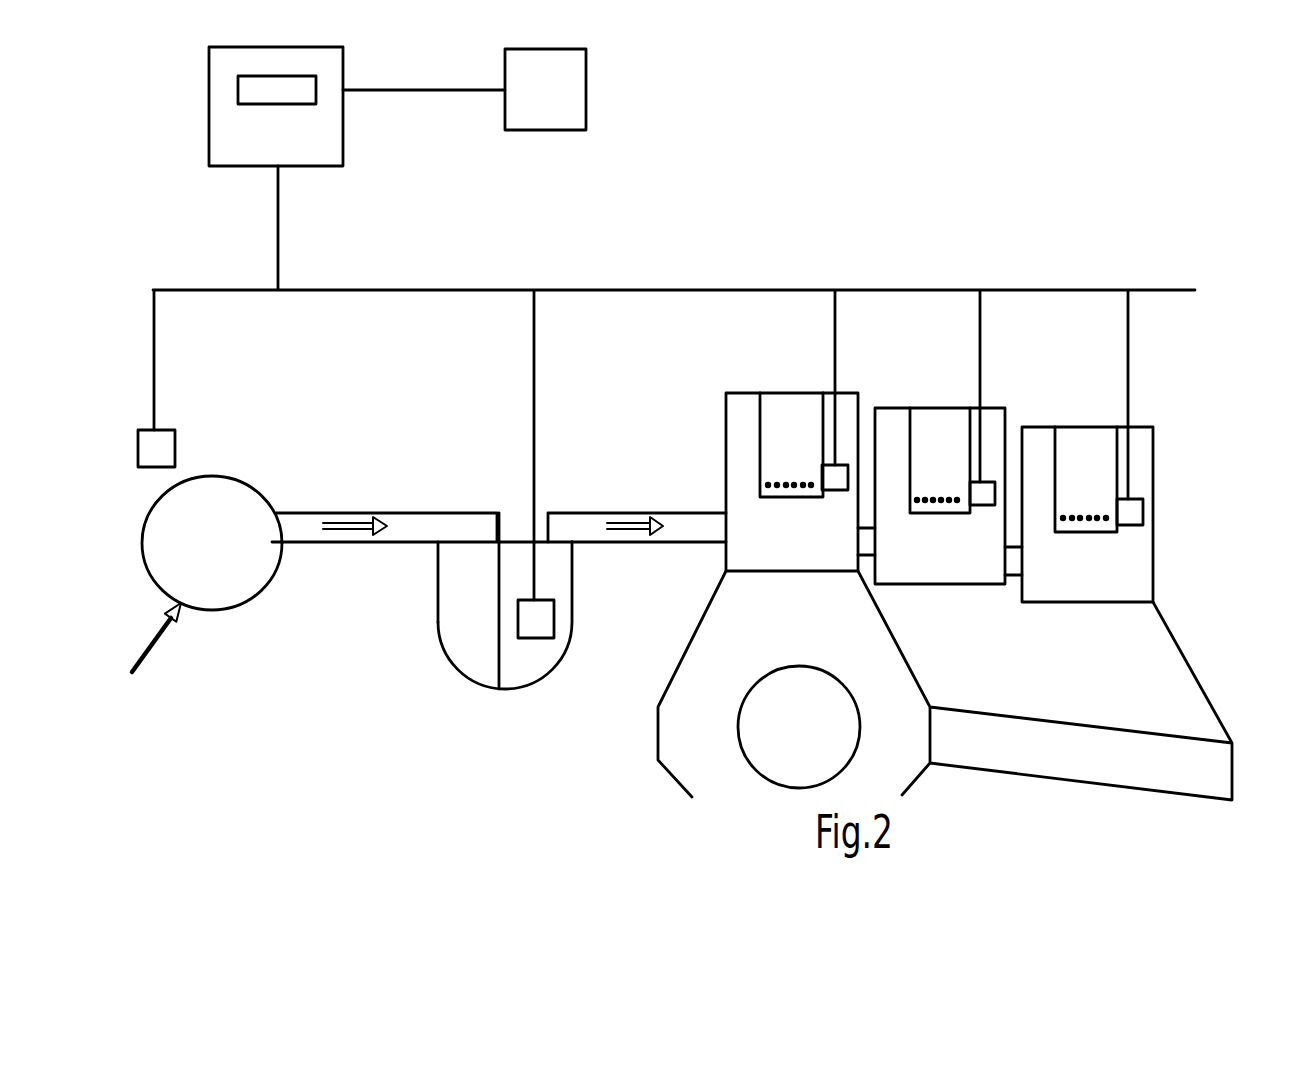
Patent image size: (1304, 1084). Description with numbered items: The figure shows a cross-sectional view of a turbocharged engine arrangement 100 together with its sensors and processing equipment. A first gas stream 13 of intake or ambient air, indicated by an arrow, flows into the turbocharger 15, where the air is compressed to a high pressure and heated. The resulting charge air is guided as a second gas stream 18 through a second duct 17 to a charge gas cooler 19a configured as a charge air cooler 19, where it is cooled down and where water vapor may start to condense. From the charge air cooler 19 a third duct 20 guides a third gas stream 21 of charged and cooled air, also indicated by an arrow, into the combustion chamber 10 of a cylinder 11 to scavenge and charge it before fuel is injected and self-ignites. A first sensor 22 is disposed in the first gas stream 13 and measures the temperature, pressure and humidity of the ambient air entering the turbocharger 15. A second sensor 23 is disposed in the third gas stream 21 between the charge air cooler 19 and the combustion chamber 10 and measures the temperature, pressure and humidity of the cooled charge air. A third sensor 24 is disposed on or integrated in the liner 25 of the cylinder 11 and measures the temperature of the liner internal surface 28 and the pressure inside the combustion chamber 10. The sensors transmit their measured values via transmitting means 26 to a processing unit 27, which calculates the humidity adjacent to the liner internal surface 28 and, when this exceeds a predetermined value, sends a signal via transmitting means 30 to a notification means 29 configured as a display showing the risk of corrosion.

The turbocharged engine arrangement 100 is at (1095, 102).
The combustion chamber 10 is at (793, 420).
The cylinder 11 is at (727, 487).
The first gas stream 13 is at (147, 648).
The turbocharger 15 is at (248, 602).
The second duct 17 is at (425, 512).
The second gas stream 18 is at (350, 513).
The charge air cooler 19 is at (455, 668).
The charge gas cooler 19a is at (438, 610).
The third duct 20 is at (677, 542).
The third gas stream 21 is at (632, 512).
The first sensor 22 is at (177, 448).
The second sensor 23 is at (545, 640).
The third sensor 24 is at (842, 465).
The liner 25 is at (738, 443).
The transmitting means 26 is at (608, 290).
The processing unit 27 is at (343, 112).
The liner internal surface 28 is at (760, 430).
The notification means 29 is at (587, 87).
The transmitting means 30 is at (407, 88).